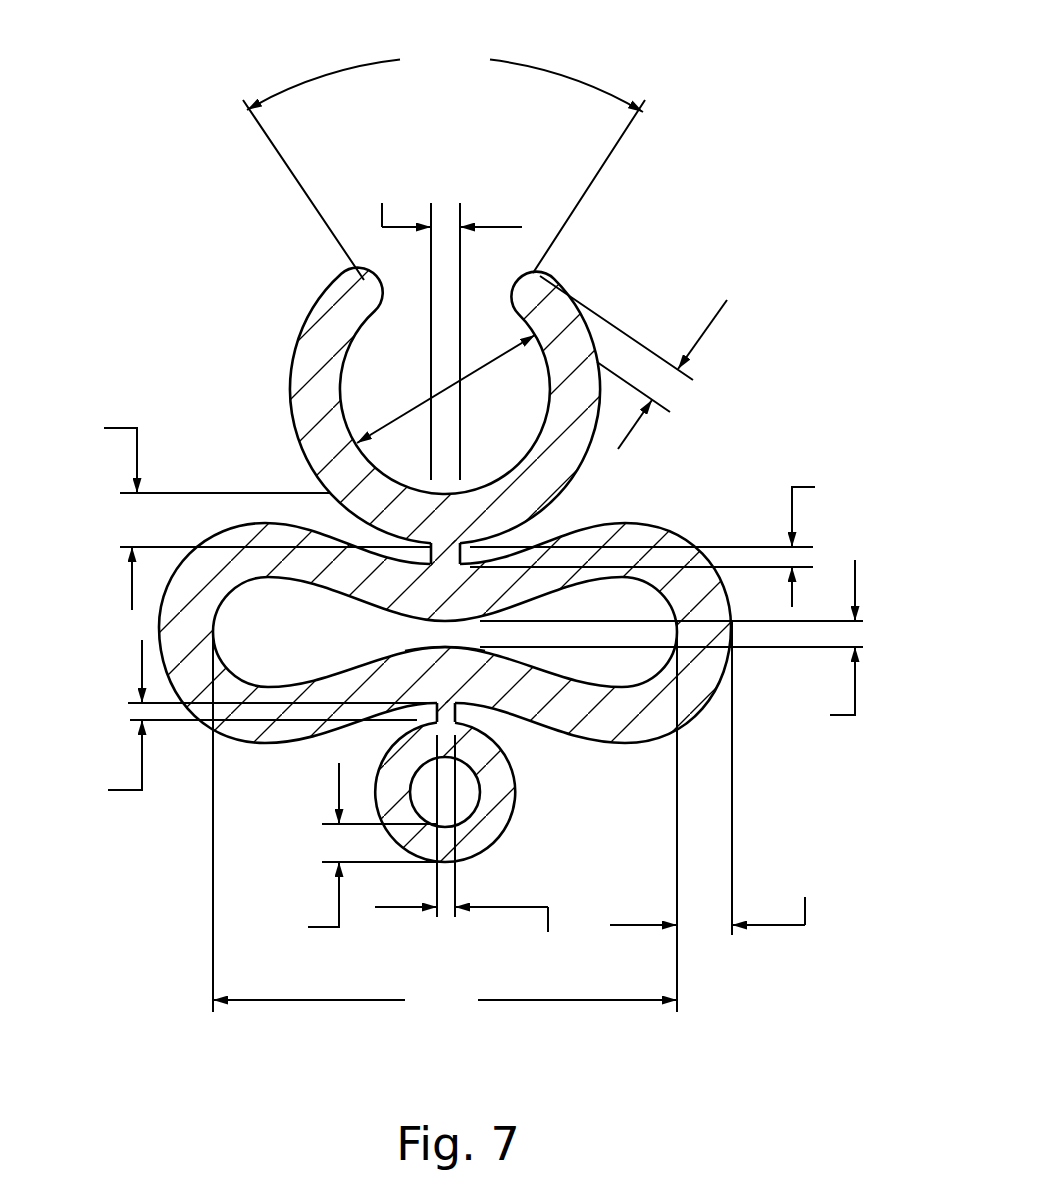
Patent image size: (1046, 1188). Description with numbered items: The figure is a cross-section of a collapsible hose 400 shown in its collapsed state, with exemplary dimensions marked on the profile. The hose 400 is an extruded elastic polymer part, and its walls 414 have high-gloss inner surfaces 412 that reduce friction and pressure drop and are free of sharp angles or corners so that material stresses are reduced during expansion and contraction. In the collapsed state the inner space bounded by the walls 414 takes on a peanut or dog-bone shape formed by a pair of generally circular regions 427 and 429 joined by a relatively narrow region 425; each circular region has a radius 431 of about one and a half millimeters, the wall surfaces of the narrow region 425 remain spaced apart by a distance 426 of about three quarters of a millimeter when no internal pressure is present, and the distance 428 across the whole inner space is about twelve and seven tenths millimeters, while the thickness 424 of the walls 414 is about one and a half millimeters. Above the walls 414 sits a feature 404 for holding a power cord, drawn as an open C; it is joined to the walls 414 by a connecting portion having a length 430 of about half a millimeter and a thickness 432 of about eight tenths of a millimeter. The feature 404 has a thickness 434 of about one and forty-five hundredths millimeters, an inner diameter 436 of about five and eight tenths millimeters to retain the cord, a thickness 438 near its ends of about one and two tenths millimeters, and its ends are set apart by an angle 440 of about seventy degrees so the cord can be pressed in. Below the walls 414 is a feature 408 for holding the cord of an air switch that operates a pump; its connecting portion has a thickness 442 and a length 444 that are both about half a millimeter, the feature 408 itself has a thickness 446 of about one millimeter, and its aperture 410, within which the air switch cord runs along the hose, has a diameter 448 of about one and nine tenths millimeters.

The collapsible hose 400 is at (735, 158).
The feature for holding a power cord 404 is at (310, 358).
The feature for holding an air switch 408 is at (503, 808).
The aperture 410 is at (468, 795).
The inner surfaces 412 is at (343, 660).
The walls 414 is at (243, 538).
The thickness of walls 424 is at (713, 816).
The relatively narrow region 425 is at (458, 642).
The distance 426 is at (671, 644).
The generally circular region 427 is at (268, 667).
The distance across inner space 428 is at (445, 820).
The generally circular region 429 is at (630, 672).
The length 430 is at (666, 540).
The radius 431 is at (212, 627).
The thickness 432 is at (439, 326).
The thickness of feature 404 434 is at (243, 512).
The diameter 436 is at (422, 402).
The thickness proximate the ends 438 is at (727, 300).
The angle 440 is at (444, 163).
The thickness 442 is at (469, 847).
The length 444 is at (249, 722).
The thickness of feature 408 446 is at (349, 852).
The diameter of aperture 448 is at (473, 813).